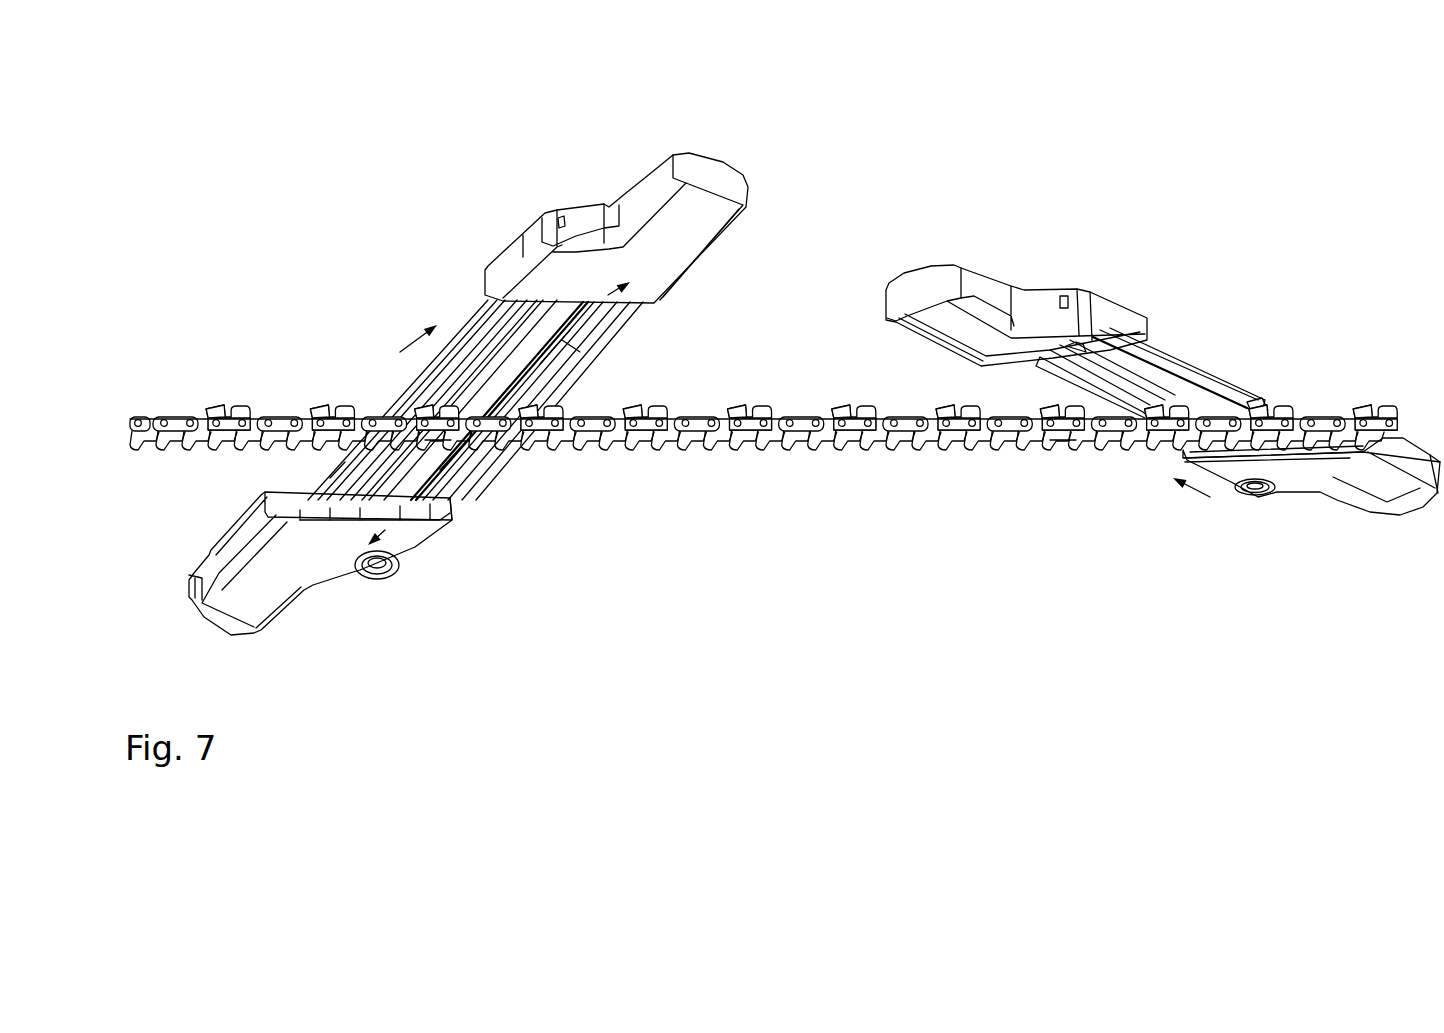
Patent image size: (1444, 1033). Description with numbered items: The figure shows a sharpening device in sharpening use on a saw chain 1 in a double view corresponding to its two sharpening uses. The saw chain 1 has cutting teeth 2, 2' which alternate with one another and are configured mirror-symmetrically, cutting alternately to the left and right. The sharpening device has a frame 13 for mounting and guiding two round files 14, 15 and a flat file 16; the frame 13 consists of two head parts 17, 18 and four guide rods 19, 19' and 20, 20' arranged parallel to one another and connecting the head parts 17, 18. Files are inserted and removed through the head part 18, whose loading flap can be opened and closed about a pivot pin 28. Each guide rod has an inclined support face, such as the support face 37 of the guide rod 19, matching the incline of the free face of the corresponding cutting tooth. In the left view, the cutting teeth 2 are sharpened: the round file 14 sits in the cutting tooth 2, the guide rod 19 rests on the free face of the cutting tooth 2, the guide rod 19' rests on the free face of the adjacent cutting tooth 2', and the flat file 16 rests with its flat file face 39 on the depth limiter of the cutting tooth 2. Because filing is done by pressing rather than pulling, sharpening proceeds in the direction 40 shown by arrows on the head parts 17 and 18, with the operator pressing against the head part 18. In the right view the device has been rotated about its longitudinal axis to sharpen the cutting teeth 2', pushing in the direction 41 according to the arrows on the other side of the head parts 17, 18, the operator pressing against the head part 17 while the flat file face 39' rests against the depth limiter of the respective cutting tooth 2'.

The saw chain 1 is at (805, 472).
The cutting tooth 2 is at (754, 469).
The cutting tooth 2' is at (846, 422).
The frame 13 is at (357, 603).
The round file 14 is at (435, 410).
The round file 15 is at (1110, 355).
The flat file 16 is at (420, 525).
The head part 17 is at (575, 192).
The head part 18 is at (226, 640).
The guide rod 19 is at (710, 368).
The guide rod 19' is at (760, 444).
The guide rod 20 is at (732, 423).
The guide rod 20' is at (746, 399).
The pivot pin 28 is at (387, 570).
The support face 37 is at (450, 380).
The flat file face 39 is at (468, 386).
The flat file face 39' is at (1197, 336).
The direction 40 is at (400, 352).
The direction 41 is at (615, 283).